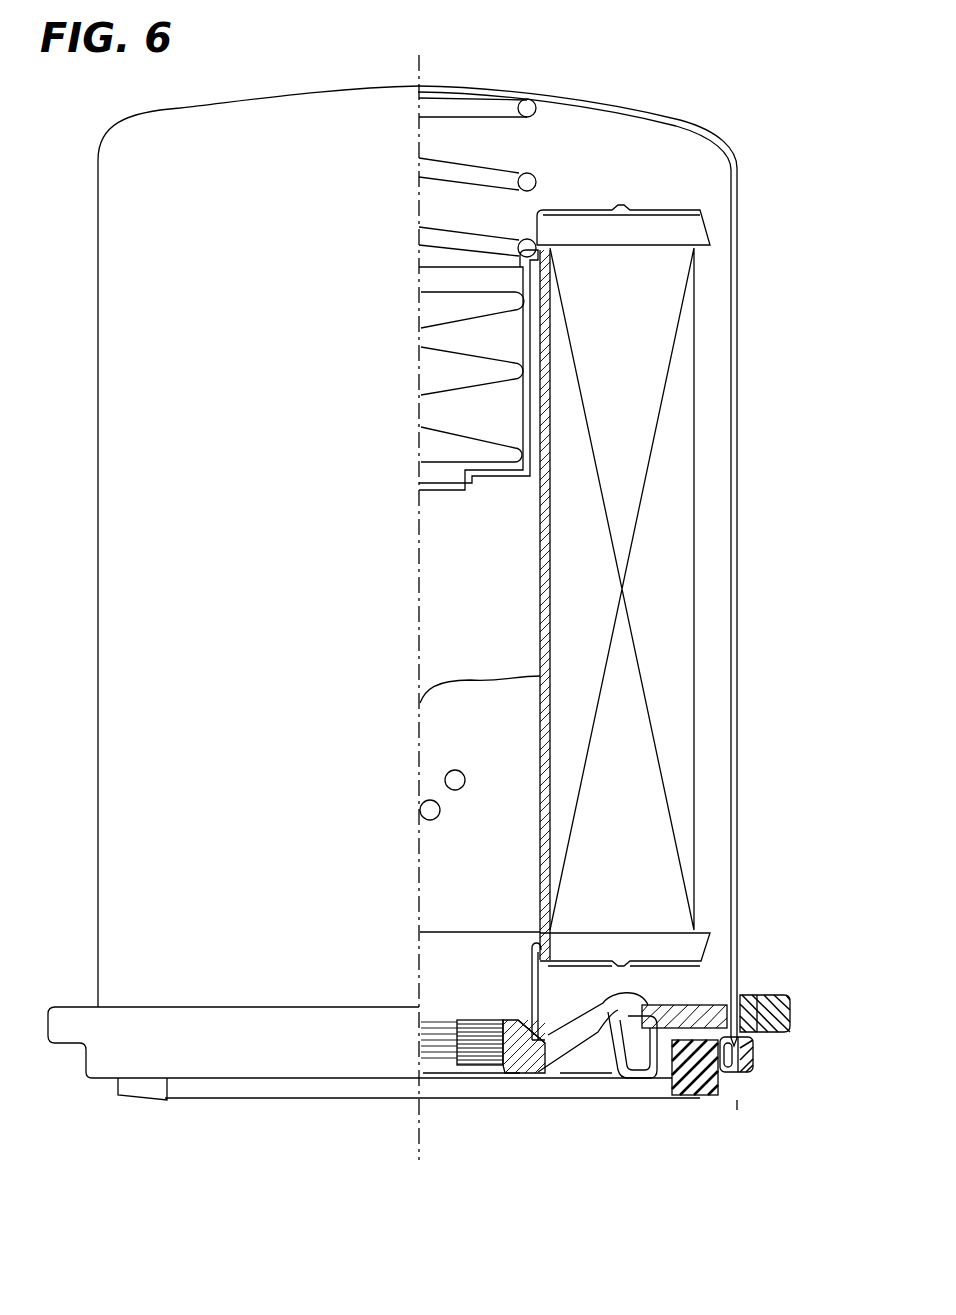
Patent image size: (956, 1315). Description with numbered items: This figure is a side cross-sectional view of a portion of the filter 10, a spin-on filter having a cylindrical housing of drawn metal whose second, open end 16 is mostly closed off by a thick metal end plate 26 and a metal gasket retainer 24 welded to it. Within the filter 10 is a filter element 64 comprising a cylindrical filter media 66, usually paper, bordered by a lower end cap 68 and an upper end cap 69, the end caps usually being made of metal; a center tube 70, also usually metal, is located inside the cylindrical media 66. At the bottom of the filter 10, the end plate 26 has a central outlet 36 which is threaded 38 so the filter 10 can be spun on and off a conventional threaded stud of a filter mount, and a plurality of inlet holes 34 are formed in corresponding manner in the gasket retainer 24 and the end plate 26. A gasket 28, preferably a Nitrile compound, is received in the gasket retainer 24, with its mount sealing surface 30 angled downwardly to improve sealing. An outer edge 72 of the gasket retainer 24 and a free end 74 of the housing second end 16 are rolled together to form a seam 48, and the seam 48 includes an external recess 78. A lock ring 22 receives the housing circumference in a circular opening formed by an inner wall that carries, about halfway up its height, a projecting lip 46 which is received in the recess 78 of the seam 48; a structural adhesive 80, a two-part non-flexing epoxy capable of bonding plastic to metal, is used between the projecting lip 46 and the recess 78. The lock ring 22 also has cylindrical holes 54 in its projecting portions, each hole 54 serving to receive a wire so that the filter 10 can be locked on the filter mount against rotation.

The filter 10 is at (822, 386).
The second open end of housing 16 is at (737, 997).
The lock ring 22 is at (73, 1030).
The gasket retainer 24 is at (621, 1078).
The end plate 26 is at (607, 1018).
The gasket 28 is at (330, 1095).
The mount sealing surface 30 is at (140, 1100).
The inlet holes 34 is at (574, 1065).
The outlet 36 is at (470, 1068).
The threads 38 is at (458, 1020).
The projecting lip 46 is at (757, 1033).
The seam 48 is at (737, 1105).
The cylindrical hole 54 is at (767, 993).
The filter element 64 is at (485, 648).
The cylindrical filter media 66 is at (672, 575).
The lower end cap 68 is at (710, 952).
The upper end cap 69 is at (578, 225).
The center tube 70 is at (538, 795).
The outer edge of gasket retainer 72 is at (726, 1095).
The free end of housing 74 is at (737, 1077).
The external recess 78 is at (718, 1015).
The structural adhesive 80 is at (760, 1050).